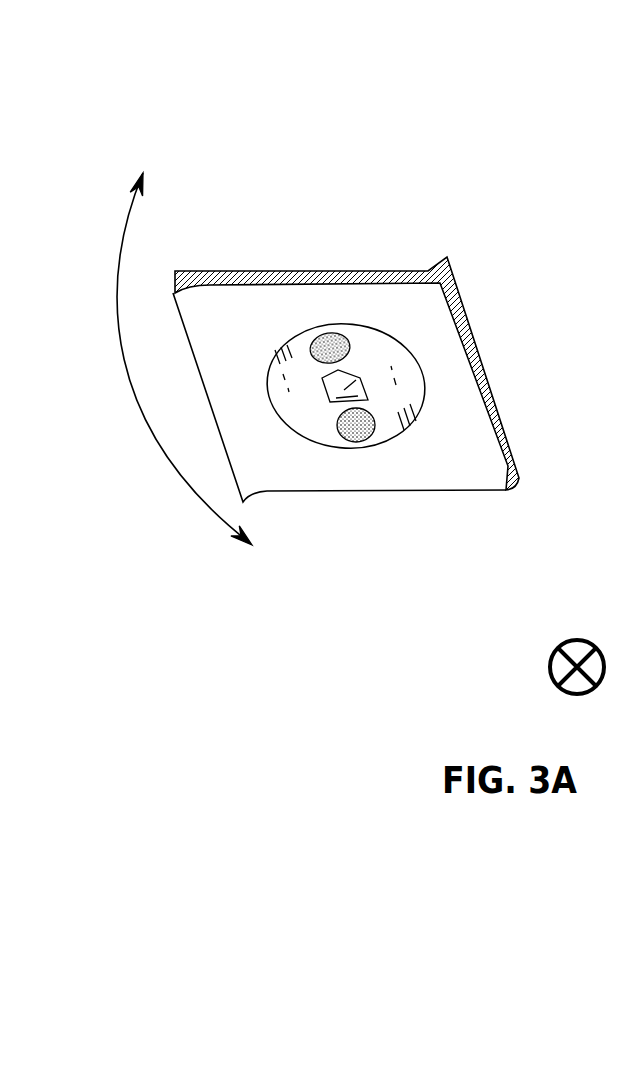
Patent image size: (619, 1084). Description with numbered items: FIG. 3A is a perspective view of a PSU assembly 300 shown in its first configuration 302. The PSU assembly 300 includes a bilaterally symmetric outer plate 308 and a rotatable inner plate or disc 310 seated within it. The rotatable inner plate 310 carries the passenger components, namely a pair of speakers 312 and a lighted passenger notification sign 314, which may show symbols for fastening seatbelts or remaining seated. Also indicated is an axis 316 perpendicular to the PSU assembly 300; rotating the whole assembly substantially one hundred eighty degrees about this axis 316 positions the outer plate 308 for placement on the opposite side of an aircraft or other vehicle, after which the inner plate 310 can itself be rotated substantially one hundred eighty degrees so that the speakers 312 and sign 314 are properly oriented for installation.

The PSU assembly 300 is at (368, 336).
The first configuration 302 is at (308, 540).
The outer plate 308 is at (462, 457).
The rotatable inner plate 310 is at (313, 330).
The pair of speakers 312 is at (340, 345).
The lighted passenger notification sign 314 is at (333, 388).
The axis 316 is at (550, 671).